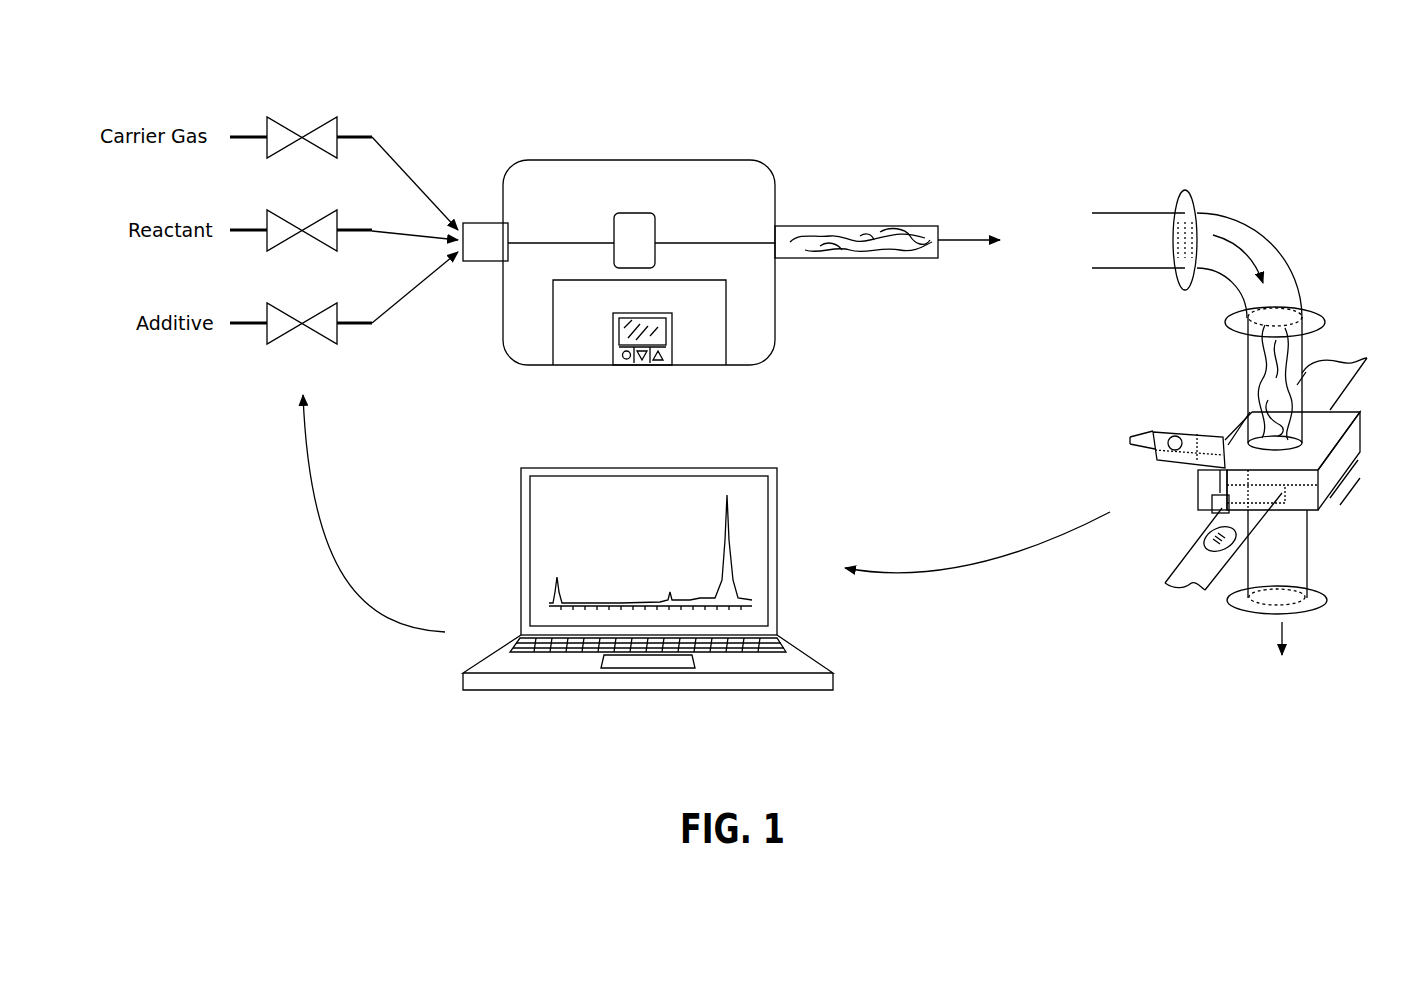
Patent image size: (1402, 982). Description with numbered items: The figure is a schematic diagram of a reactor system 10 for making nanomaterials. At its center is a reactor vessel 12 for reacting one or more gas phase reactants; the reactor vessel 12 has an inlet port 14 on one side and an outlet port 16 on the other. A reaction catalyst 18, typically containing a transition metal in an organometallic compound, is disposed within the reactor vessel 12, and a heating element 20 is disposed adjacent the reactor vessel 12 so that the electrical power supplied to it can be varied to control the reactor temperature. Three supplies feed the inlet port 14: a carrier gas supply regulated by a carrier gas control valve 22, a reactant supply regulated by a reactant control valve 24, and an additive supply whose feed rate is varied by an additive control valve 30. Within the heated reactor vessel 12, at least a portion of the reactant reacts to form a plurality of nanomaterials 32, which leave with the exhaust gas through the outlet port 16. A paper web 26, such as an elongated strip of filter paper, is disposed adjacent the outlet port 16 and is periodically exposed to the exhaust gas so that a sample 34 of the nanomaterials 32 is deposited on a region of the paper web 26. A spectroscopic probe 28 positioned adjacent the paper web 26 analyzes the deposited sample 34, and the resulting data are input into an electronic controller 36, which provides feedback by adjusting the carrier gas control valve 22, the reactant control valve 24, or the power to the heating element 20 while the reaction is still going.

The reactor system 10 is at (303, 630).
The reactor vessel 12 is at (742, 160).
The inlet port 14 is at (478, 223).
The outlet port 16 is at (777, 205).
The reaction catalyst 18 is at (633, 213).
The heating element 20 is at (775, 336).
The carrier gas control valve 22 is at (302, 125).
The reactant control valve 24 is at (270, 212).
The paper web 26 is at (1198, 591).
The spectroscopic probe 28 is at (1175, 434).
The additive control valve 30 is at (270, 305).
The nanomaterials 32 is at (915, 226).
The sample 34 is at (1200, 538).
The electronic controller 36 is at (777, 508).